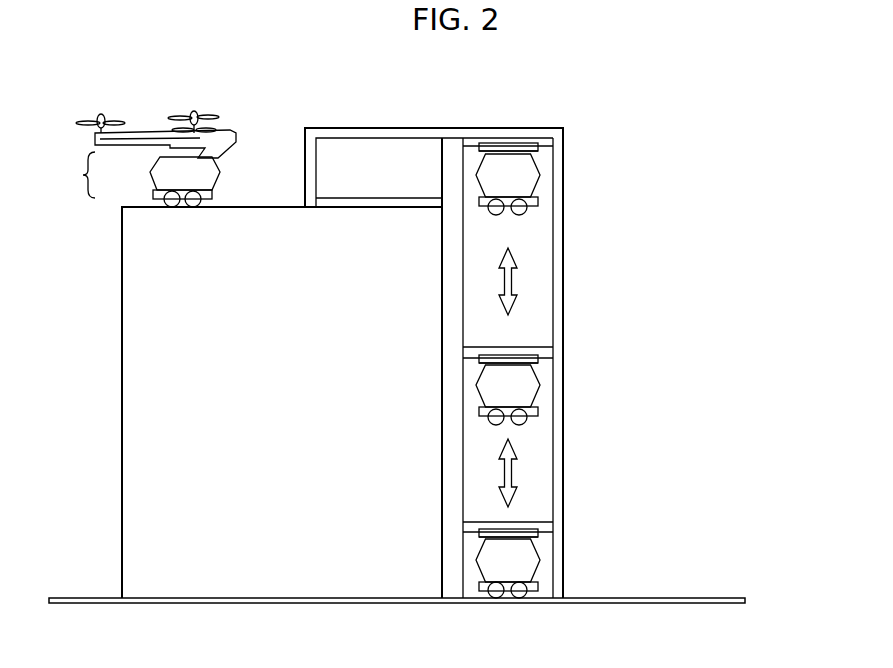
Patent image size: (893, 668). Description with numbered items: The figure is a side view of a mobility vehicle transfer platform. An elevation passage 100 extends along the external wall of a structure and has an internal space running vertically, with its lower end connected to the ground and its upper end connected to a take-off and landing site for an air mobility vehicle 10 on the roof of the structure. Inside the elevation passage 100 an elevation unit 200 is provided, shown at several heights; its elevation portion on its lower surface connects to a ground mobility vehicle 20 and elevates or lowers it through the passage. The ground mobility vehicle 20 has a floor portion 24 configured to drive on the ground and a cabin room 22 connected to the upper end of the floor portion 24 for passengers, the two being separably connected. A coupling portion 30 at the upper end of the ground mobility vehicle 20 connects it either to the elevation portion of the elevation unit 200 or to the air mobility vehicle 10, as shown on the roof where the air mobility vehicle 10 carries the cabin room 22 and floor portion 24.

The air mobility vehicle 10 is at (157, 130).
The ground mobility vehicle 20 is at (77, 175).
The cabin room 22 is at (525, 176).
The floor portion 24 is at (537, 200).
The coupling portion 30 is at (540, 151).
The elevation passage 100 is at (563, 277).
The elevation unit 200 is at (541, 143).